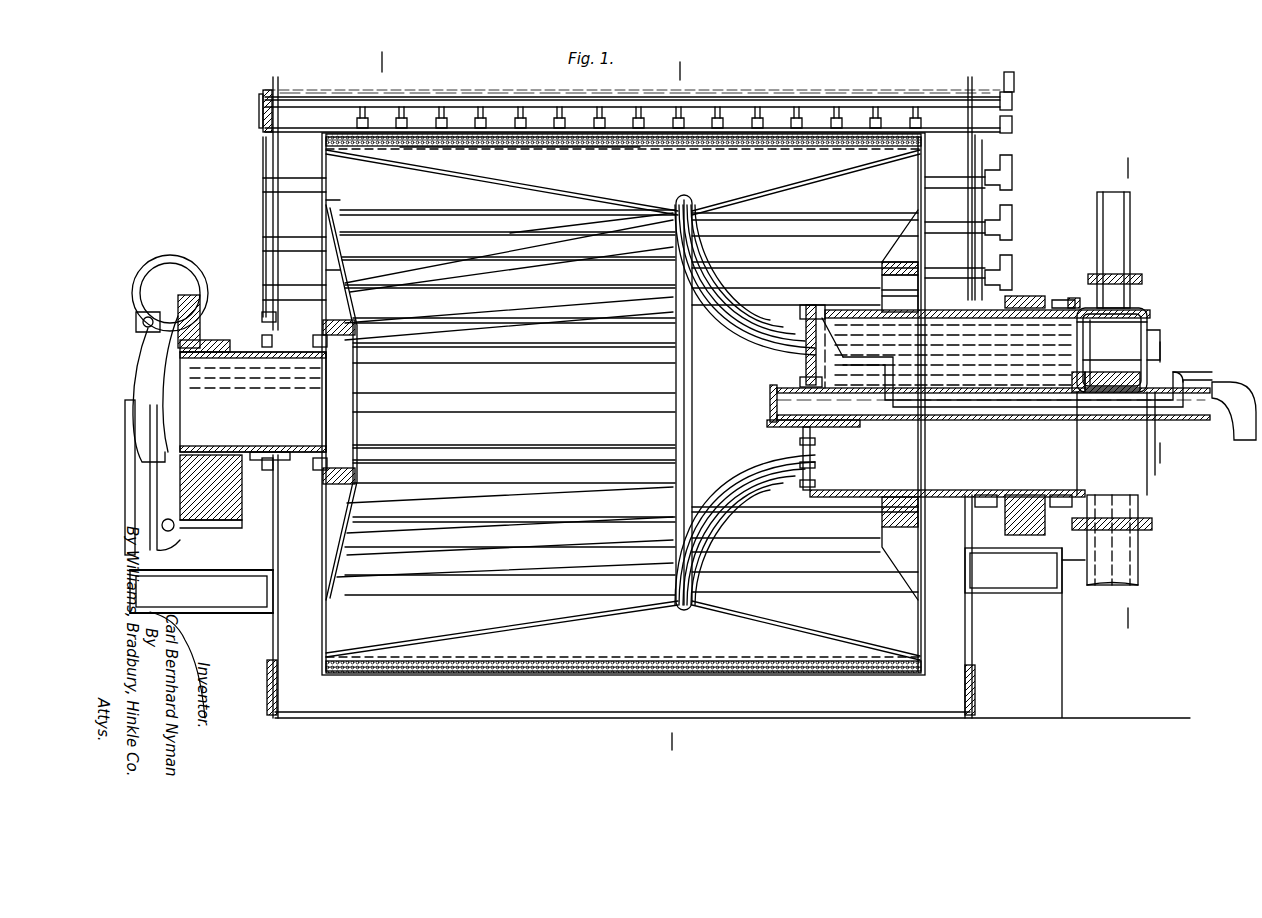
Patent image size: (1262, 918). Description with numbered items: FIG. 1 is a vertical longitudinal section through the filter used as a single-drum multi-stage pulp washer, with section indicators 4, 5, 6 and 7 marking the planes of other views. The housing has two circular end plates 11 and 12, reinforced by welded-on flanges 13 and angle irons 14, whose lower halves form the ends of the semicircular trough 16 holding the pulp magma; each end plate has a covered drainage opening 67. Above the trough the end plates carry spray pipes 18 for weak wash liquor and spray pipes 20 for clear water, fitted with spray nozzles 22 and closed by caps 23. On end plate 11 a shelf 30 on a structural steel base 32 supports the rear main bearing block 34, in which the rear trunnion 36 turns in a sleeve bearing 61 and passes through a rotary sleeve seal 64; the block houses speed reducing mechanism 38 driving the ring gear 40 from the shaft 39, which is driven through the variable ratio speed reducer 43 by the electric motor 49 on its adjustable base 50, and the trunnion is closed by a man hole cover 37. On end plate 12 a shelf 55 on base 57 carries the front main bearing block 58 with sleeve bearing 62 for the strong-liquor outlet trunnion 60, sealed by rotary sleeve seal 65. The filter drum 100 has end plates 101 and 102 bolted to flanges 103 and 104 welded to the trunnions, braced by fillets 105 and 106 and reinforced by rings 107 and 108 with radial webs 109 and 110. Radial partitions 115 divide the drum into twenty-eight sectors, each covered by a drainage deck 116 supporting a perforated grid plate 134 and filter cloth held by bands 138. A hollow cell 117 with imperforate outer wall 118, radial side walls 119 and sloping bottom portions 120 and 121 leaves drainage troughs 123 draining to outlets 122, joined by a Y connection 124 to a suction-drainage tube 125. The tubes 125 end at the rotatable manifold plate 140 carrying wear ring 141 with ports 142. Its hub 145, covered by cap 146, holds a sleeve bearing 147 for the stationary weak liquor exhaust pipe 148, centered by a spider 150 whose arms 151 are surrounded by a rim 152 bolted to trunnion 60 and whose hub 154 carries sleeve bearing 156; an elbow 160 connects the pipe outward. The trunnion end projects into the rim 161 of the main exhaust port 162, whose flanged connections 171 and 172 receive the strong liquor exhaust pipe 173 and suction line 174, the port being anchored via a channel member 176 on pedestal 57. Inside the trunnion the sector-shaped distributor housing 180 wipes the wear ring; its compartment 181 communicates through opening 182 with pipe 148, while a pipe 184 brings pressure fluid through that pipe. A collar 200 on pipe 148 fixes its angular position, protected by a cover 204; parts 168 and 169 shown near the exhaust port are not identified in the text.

The section line 4- 4 is at (700, 742).
The section line 5- 5 is at (1118, 617).
The section line 6- 6 is at (1128, 453).
The section line 7- 7 is at (398, 208).
The end plate 11 is at (273, 634).
The end plate 12 is at (973, 630).
The flanges 13 is at (808, 648).
The angle irons 14 is at (266, 318).
The trough 16 is at (560, 700).
The spray pipes 18 is at (276, 256).
The spray pipes 20 is at (940, 105).
The spray nozzles 22 is at (432, 107).
The caps 23 is at (268, 108).
The shelf 30 is at (201, 591).
The structural steel base 32 is at (267, 585).
The rear main bearing block 34 is at (211, 491).
The rear trunnion 36 is at (258, 360).
The man hole cover 37 is at (146, 386).
The speed reducing mechanism 38 is at (150, 466).
The shaft 39 is at (162, 524).
The ring gear 40 is at (208, 375).
The variable ratio speed reducer 43 is at (125, 420).
The electric motor 49 is at (166, 276).
The adjustable base 50 is at (140, 316).
The shelf 55 is at (1013, 570).
The structural steel base 57 is at (1062, 645).
The front main bearing block 58 is at (1005, 518).
The strong-liquor outlet trunnion 60 is at (960, 345).
The sleeve bearing 61 is at (204, 323).
The sleeve bearing 62 is at (1030, 294).
The rotary sleeve seal 64 is at (266, 452).
The rotary sleeve seal 65 is at (990, 495).
The covered drainage opening 67 is at (976, 690).
The filter drum 100 is at (455, 676).
The drum end plate 101 is at (332, 215).
The drum end plate 102 is at (918, 190).
The flange 103 is at (322, 342).
The flange 104 is at (918, 300).
The fillet 105 is at (323, 484).
The fillet 106 is at (936, 500).
The ring 107 is at (323, 326).
The ring 108 is at (900, 262).
The radial webs 109 is at (330, 275).
The radial webs 110 is at (918, 226).
The radial partitions 115 is at (418, 590).
The filter medium supporting section 116 is at (715, 672).
The hollow cell 117 is at (573, 456).
The imperforate outer wall 118 is at (428, 420).
The radial side walls 119 is at (648, 610).
The sloping bottom portion 120 is at (472, 650).
The sloping bottom portion 121 is at (752, 622).
The outlet 122 is at (652, 638).
The drainage trough 123 is at (622, 200).
The Y connection 124 is at (692, 610).
The suction-drainage tube 125 is at (678, 502).
The perforated metal grid plate 134 is at (545, 155).
The circumferential metal bands 138 is at (600, 672).
The rotatable manifold plate 140 is at (816, 446).
The wear ring 141 is at (816, 466).
The aperture 142 is at (816, 486).
The hub 145 is at (822, 325).
The cap 146 is at (770, 395).
The sleeve bearing 147 is at (872, 404).
The weak liquor exhaust pipe 148 is at (1077, 362).
The spider 150 is at (1077, 345).
The arms 151 is at (1077, 328).
The rim 152 is at (1092, 318).
The hub 154 is at (1107, 372).
The sleeve bearing 156 is at (1088, 382).
The elbow 160 is at (1242, 385).
The rim 161 is at (1076, 298).
The main exhaust port 162 is at (1140, 470).
The bolt 168 is at (1062, 298).
The bracket 169 is at (1062, 565).
The flanged pipe connection 171 is at (1140, 512).
The flanged pipe connection 172 is at (1142, 292).
The strong liquor exhaust pipe 173 is at (1138, 562).
The suction line 174 is at (1132, 262).
The channel member 176 is at (800, 314).
The distributor housing 180 is at (895, 290).
The compartment 181 is at (848, 380).
The opening 182 is at (870, 424).
The pipe 184 is at (1212, 372).
The collar 200 is at (1188, 380).
The cover 204 is at (1192, 340).